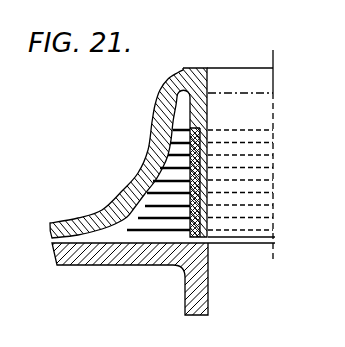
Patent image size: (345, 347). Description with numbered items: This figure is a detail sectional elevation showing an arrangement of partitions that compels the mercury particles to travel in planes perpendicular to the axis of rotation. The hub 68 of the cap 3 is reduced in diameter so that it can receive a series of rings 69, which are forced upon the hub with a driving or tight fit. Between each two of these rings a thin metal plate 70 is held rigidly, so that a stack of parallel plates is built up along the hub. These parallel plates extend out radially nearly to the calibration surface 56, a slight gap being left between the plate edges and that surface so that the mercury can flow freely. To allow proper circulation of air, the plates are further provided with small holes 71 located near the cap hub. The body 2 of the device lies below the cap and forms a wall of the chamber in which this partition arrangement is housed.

The hub 68 is at (175, 115).
The rings 69 is at (178, 148).
The cap 3 is at (141, 160).
The small holes 71 is at (158, 183).
The thin metal plate 70 is at (150, 204).
The calibration surface 56 is at (105, 212).
The body 2 is at (127, 253).